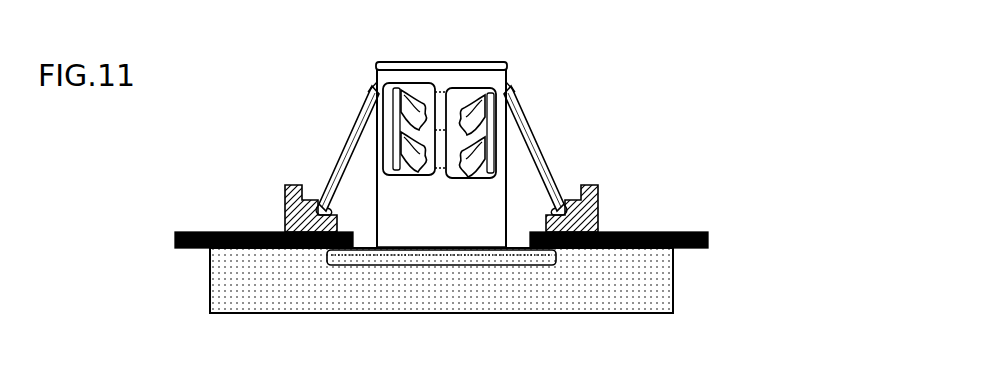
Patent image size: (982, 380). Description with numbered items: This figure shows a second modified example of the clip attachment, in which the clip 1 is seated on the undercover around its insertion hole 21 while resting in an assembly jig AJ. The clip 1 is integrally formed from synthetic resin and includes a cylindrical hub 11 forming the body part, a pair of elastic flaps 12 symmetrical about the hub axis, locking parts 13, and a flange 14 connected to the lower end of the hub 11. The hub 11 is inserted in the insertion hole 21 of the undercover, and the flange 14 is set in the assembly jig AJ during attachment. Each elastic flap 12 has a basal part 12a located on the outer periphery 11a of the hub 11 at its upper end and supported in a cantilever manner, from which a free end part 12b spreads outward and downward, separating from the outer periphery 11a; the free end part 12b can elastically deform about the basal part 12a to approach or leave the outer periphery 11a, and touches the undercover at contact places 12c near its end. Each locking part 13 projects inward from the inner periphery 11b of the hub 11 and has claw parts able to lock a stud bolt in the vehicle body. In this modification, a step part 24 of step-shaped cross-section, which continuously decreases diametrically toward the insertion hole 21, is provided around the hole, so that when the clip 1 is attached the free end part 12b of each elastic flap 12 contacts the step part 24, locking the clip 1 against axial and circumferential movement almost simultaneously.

The clip 1 is at (383, 55).
The hub 11 is at (470, 60).
The outer periphery 11a is at (473, 230).
The inner periphery 11b is at (408, 177).
The elastic flap 12 is at (344, 140).
The basal part 12a is at (372, 96).
The free end part 12b is at (321, 209).
The contact place 12c is at (318, 197).
The locking part 13 is at (452, 182).
The flange 14 is at (449, 262).
The insertion hole 21 is at (520, 247).
The step part 24 is at (315, 200).
The assembly jig AJ is at (650, 284).